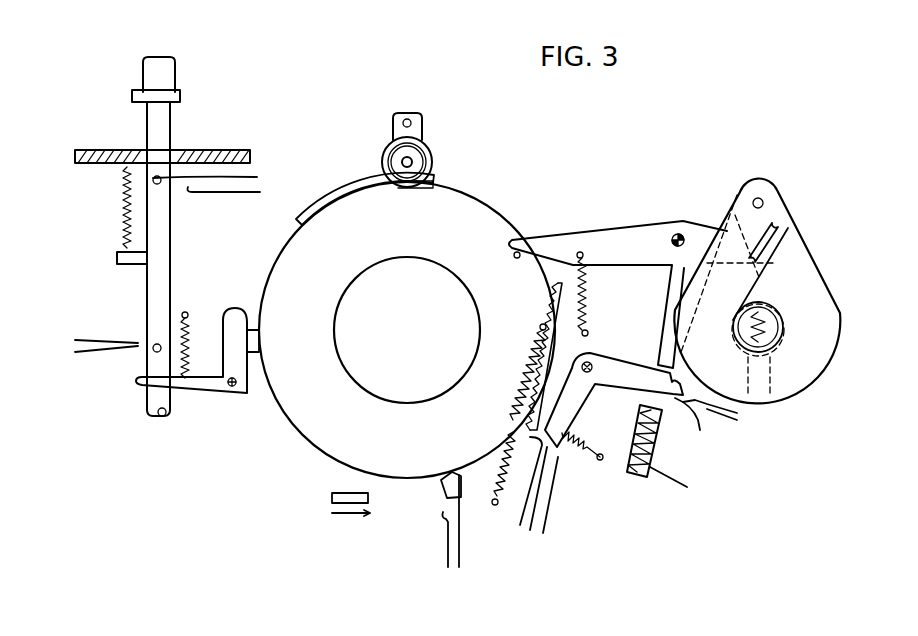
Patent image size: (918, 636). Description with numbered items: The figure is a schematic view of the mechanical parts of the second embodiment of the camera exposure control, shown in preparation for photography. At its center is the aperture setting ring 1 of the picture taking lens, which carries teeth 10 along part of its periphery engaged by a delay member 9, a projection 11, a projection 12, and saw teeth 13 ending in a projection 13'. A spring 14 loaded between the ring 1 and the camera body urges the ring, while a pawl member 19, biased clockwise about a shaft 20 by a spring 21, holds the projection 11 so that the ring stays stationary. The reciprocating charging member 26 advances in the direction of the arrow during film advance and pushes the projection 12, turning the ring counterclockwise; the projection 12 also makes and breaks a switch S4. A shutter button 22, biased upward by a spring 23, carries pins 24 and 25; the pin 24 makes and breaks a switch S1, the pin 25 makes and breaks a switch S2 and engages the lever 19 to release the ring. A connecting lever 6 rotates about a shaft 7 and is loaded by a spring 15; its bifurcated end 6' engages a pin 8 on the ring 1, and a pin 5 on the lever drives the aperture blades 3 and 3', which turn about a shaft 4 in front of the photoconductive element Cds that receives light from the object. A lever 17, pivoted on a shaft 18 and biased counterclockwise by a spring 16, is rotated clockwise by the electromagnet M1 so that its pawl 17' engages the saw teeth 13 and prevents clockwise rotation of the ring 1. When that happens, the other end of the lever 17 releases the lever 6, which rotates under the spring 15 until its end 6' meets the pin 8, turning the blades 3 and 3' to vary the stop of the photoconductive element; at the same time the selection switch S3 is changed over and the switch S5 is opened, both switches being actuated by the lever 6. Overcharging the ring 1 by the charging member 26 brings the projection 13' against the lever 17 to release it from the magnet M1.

The aperture setting ring 1 is at (447, 197).
The aperture blade 3 is at (769, 291).
The aperture blade 3' is at (761, 274).
The shaft 4 is at (758, 198).
The pin 5 is at (756, 260).
The connecting lever 6 is at (618, 271).
The bifurcated end 6' is at (532, 212).
The shaft 7 is at (677, 233).
The pin 8 is at (514, 255).
The delay member 9 is at (414, 162).
The teeth 10 is at (332, 201).
The projection 11 is at (256, 354).
The projection 12 is at (442, 486).
The saw teeth 13 is at (555, 349).
The projection 13' is at (507, 375).
The spring 14 is at (489, 476).
The spring 15 is at (588, 283).
The spring 16 is at (583, 452).
The lever 17 is at (622, 400).
The pawl 17' is at (521, 481).
The shaft 18 is at (591, 363).
The pawl member 19 is at (201, 389).
The shaft 20 is at (232, 388).
The spring 21 is at (188, 337).
The shutter button 22 is at (163, 72).
The spring 23 is at (123, 213).
The pin 24 is at (153, 178).
The pin 25 is at (154, 345).
The charging member 26 is at (330, 497).
The photoconductive element Cds is at (773, 331).
The electromagnet M1 is at (637, 478).
The switch S1 is at (206, 201).
The switch S2 is at (106, 363).
The switch S3 is at (560, 490).
The switch S4 is at (470, 521).
The switch S5 is at (727, 428).